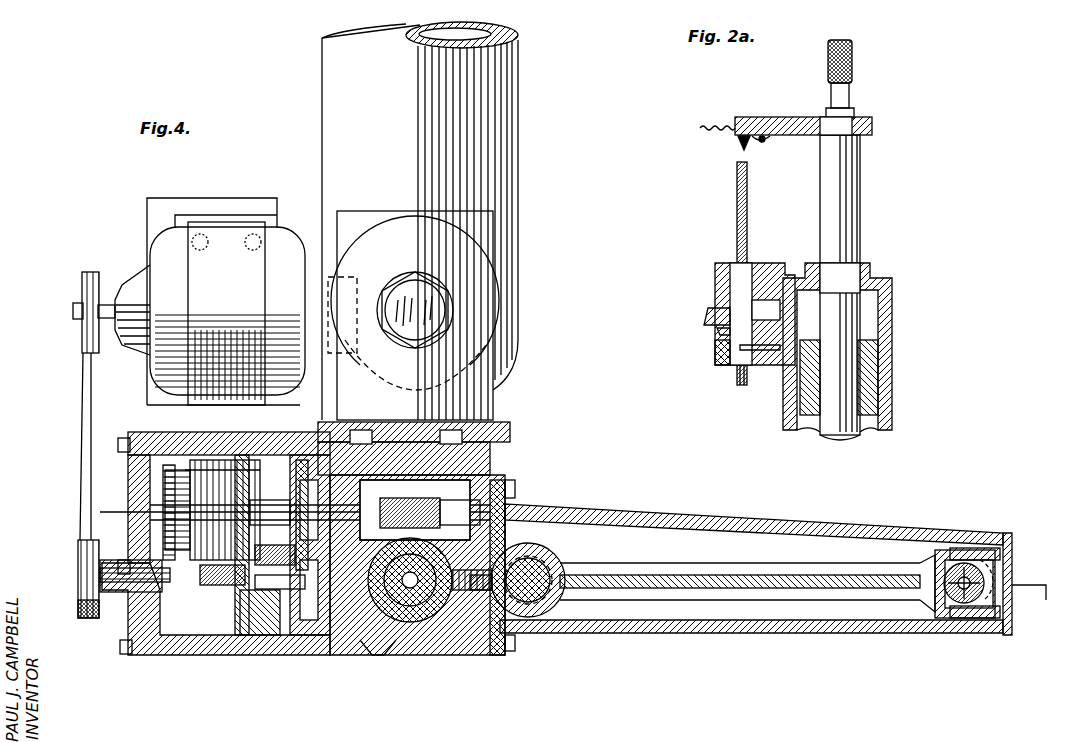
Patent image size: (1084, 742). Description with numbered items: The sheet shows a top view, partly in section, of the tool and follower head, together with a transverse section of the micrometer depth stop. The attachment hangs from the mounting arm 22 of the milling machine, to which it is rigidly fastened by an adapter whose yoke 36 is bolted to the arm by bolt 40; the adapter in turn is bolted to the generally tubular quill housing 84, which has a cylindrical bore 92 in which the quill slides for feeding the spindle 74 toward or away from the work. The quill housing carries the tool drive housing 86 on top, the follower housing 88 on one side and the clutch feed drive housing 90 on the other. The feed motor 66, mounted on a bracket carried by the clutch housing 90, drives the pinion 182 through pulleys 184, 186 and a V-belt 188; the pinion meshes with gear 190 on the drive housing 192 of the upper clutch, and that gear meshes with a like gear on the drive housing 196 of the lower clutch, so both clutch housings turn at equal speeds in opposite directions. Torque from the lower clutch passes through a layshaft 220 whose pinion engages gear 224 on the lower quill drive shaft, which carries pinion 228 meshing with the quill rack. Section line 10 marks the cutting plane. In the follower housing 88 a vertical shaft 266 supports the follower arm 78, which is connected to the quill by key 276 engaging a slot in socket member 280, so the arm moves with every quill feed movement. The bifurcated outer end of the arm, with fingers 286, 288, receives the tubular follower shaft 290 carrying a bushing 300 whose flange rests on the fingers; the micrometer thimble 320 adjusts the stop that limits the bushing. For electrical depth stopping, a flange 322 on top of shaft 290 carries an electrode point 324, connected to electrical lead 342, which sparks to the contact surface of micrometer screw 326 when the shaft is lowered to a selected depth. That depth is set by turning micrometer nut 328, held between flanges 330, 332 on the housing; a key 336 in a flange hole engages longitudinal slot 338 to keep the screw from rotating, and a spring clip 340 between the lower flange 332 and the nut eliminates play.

In FIG. 4, the mounting arm 22 is at (520, 102).
In FIG. 4, the bolt 40 is at (408, 292).
In FIG. 4, the yoke 36 is at (495, 425).
In FIG. 4, the tool and follower feed motor 66 is at (142, 264).
In FIG. 4, the pulley 184 is at (82, 282).
In FIG. 4, the V-belt 188 is at (84, 412).
In FIG. 4, the pulley 186 is at (80, 560).
In FIG. 4, the gear 190 is at (163, 485).
In FIG. 4, the drive housing 192 is at (185, 470).
In FIG. 4, the drive housing 196 is at (210, 560).
In FIG. 4, the pinion 182 is at (170, 640).
In FIG. 4, the clutch feed drive housing 90 is at (205, 655).
In FIG. 4, the layshaft 220 is at (265, 655).
In FIG. 4, the spindle 74 is at (322, 655).
In FIG. 4, the quill housing 84 is at (395, 655).
In FIG. 4, the cylindrical bore 92 is at (432, 655).
In FIG. 4, the key 276 is at (474, 655).
In FIG. 4, the gear 224 is at (300, 468).
In FIG. 4, the pinion 228 is at (445, 480).
In FIG. 4, the socket member 280 is at (505, 545).
In FIG. 4, the vertical shaft 266 is at (530, 560).
In FIG. 4, the follower housing 88 is at (740, 522).
In FIG. 4, the follower arm 78 is at (625, 568).
In FIG. 4, the finger 286 is at (982, 548).
In FIG. 4, the bushing 300 is at (984, 582).
In FIG. 4, the finger 288 is at (988, 612).
In FIG. 4, the section line 10 is at (1038, 600).
In FIG. 2A, the micrometer thimble 320 is at (856, 62).
In FIG. 2A, the flange 322 is at (752, 118).
In FIG. 2A, the electrical lead 342 is at (700, 128).
In FIG. 2A, the electrode point 324 is at (736, 139).
In FIG. 2A, the micrometer screw 326 is at (735, 172).
In FIG. 2A, the follower shaft 290 is at (851, 160).
In FIG. 2A, the flange 330 is at (716, 270).
In FIG. 2A, the micrometer nut 328 is at (710, 312).
In FIG. 2A, the spring clip 340 is at (716, 330).
In FIG. 2A, the flange 332 is at (715, 355).
In FIG. 2A, the key 336 is at (760, 352).
In FIG. 2A, the longitudinal slot 338 is at (742, 387).
In FIG. 2A, the tool drive housing 86 is at (892, 296).